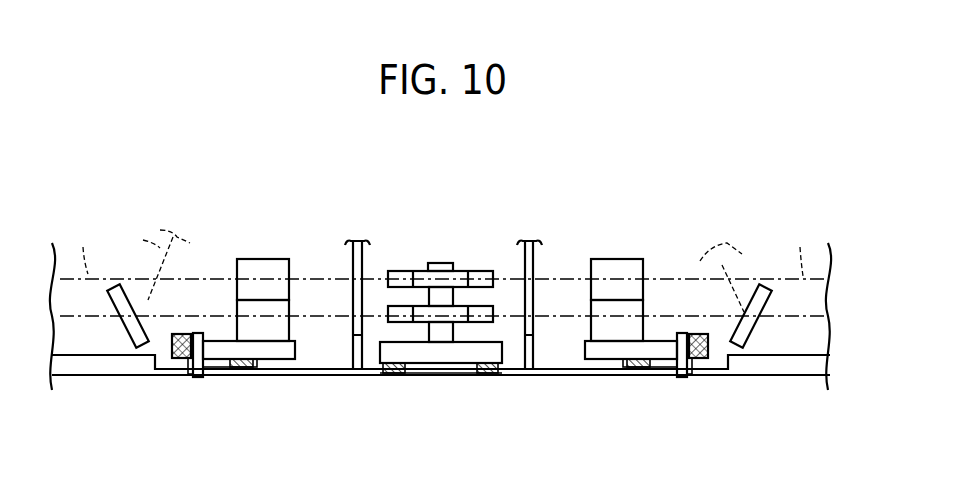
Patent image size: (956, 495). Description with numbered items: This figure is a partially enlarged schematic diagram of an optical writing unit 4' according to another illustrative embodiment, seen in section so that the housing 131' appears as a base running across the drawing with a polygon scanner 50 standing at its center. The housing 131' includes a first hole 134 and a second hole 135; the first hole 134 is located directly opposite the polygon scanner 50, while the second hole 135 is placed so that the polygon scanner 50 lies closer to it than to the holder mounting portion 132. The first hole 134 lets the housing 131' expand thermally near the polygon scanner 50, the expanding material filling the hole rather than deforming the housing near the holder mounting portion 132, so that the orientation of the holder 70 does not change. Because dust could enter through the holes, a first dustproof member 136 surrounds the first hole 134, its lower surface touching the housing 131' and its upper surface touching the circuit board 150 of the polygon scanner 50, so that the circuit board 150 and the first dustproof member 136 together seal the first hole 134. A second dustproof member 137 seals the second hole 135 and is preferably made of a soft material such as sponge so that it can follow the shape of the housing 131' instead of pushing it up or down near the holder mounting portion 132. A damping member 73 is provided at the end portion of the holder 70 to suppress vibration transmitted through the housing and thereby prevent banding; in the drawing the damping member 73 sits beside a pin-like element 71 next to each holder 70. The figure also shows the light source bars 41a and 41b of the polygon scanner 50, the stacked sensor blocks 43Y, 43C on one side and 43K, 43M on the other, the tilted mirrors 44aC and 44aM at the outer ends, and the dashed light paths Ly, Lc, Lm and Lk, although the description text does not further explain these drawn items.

The optical writing unit 4' is at (443, 233).
The housing 131' is at (441, 394).
The holder mounting portion 132 is at (187, 366).
The first hole 134 is at (412, 375).
The second hole 135 is at (232, 374).
The first dustproof member 136 is at (405, 371).
The second dustproof member 137 is at (241, 367).
The circuit board 150 is at (393, 334).
The upper light source 41a is at (404, 271).
The lower light source 41b is at (493, 318).
The yellow synchronization sensor 43Y is at (264, 267).
The cyan synchronization sensor 43C is at (283, 326).
The black synchronization sensor 43K is at (618, 267).
The magenta synchronization sensor 43M is at (600, 327).
The reflecting mirror (cyan) 44aC is at (127, 316).
The reflecting mirror (magenta) 44aM is at (768, 297).
The polygon scanner 50 is at (460, 309).
The holder 70 is at (659, 339).
The support pin 71 is at (198, 333).
The damping member 73 is at (186, 336).
The light beam (yellow) Ly is at (85, 249).
The light beam (cyan) Lc is at (154, 265).
The light beam (magenta) Lm is at (737, 277).
The light beam (black) Lk is at (804, 249).